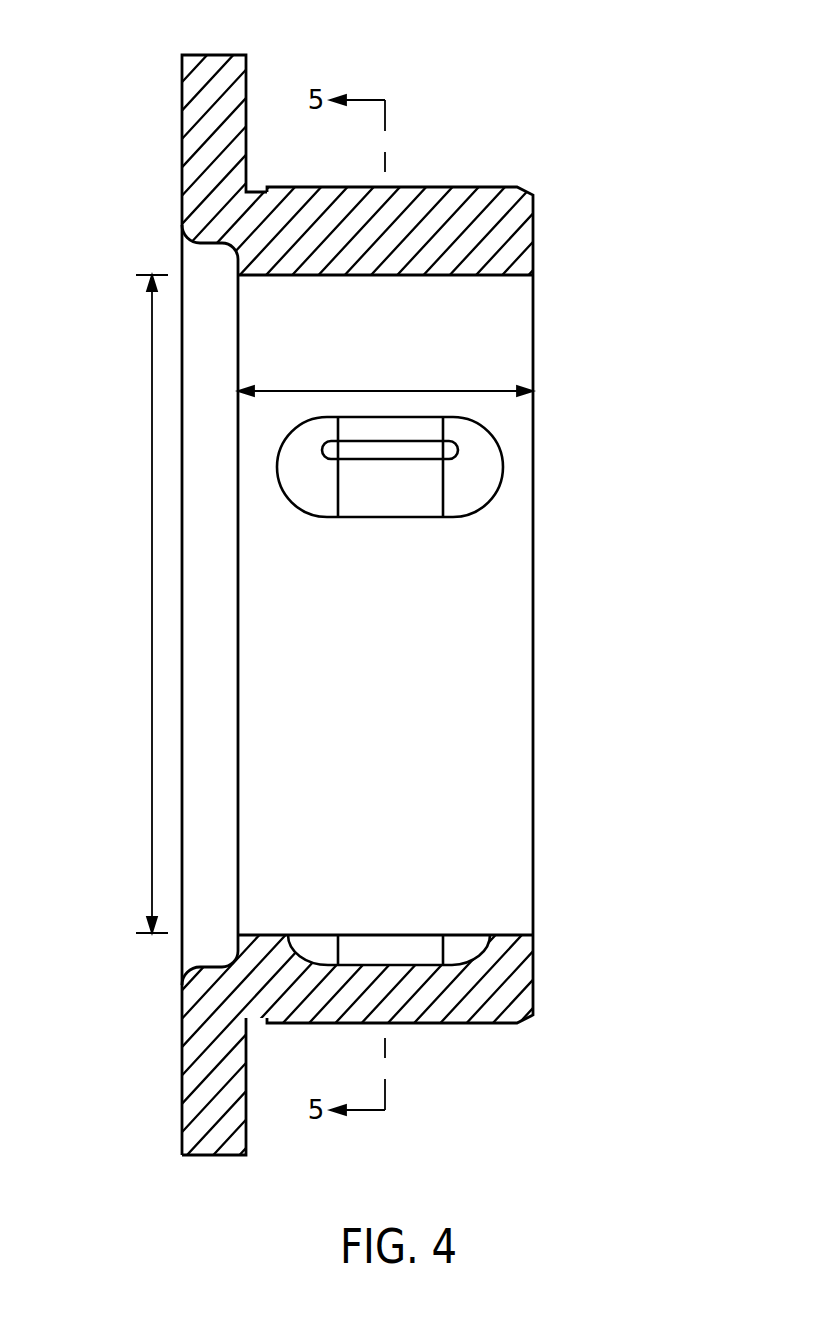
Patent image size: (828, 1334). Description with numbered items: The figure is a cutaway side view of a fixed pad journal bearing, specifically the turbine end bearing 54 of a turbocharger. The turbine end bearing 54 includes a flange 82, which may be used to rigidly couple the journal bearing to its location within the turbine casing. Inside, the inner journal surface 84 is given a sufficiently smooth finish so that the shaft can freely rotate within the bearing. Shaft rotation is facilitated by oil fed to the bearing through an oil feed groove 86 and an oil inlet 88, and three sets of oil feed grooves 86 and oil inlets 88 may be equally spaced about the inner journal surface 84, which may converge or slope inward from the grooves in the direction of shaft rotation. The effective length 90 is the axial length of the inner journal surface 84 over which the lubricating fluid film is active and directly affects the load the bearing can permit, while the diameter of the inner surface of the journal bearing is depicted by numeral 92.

The turbine end bearing 54 is at (457, 89).
The flange 82 is at (193, 102).
The inner journal surface 84 is at (503, 276).
The oil feed groove 86 is at (467, 488).
The oil inlet 88 is at (443, 449).
The effective length 90 is at (481, 390).
The diameter of the inner surface 92 is at (151, 607).